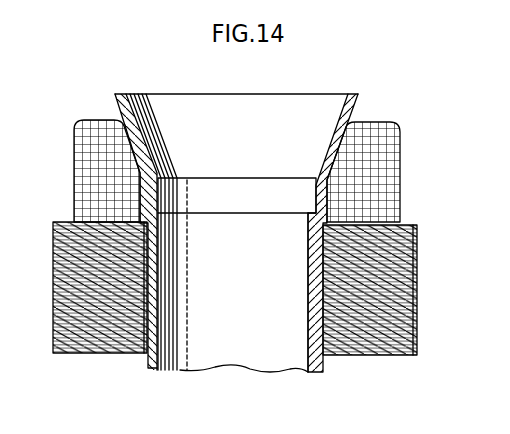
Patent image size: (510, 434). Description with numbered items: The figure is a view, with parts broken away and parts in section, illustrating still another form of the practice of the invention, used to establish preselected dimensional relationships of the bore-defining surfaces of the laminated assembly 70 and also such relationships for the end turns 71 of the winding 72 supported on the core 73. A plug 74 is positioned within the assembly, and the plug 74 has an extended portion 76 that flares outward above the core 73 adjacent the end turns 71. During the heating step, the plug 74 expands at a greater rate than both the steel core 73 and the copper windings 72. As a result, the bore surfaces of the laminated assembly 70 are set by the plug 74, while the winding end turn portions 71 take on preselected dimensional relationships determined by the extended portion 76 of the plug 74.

The laminated assembly 70 is at (244, 222).
The end turns 71 is at (376, 126).
The winding 72 is at (74, 171).
The core 73 is at (417, 270).
The plug 74 is at (307, 276).
The extended portion 76 is at (336, 130).